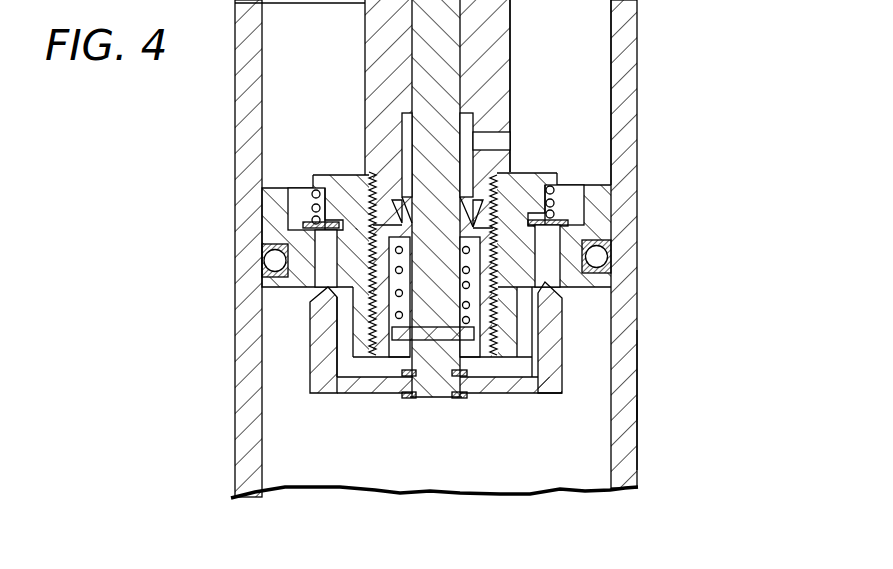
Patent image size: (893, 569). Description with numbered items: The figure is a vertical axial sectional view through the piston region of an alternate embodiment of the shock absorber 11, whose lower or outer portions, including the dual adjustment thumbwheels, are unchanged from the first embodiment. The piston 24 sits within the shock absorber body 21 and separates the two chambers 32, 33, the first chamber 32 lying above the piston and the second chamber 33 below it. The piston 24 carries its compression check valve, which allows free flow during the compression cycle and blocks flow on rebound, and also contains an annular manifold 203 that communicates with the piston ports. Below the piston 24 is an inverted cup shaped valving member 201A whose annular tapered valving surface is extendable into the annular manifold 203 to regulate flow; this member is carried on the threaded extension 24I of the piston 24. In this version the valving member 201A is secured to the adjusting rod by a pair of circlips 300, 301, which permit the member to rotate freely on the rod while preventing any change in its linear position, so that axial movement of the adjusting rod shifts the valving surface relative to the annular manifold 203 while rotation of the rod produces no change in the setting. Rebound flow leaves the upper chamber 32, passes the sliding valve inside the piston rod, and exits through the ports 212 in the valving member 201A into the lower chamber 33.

The shock absorber 11 is at (637, 423).
The shock absorber body 21 is at (626, 315).
The piston 24 is at (498, 251).
The extension of the piston 24I is at (363, 325).
The chamber 32 is at (590, 56).
The chamber 33 is at (637, 381).
The valving member 201A is at (488, 395).
The annular manifold 203 is at (538, 288).
The ports 212 is at (510, 395).
The circlip 300 is at (393, 374).
The circlip 301 is at (378, 393).